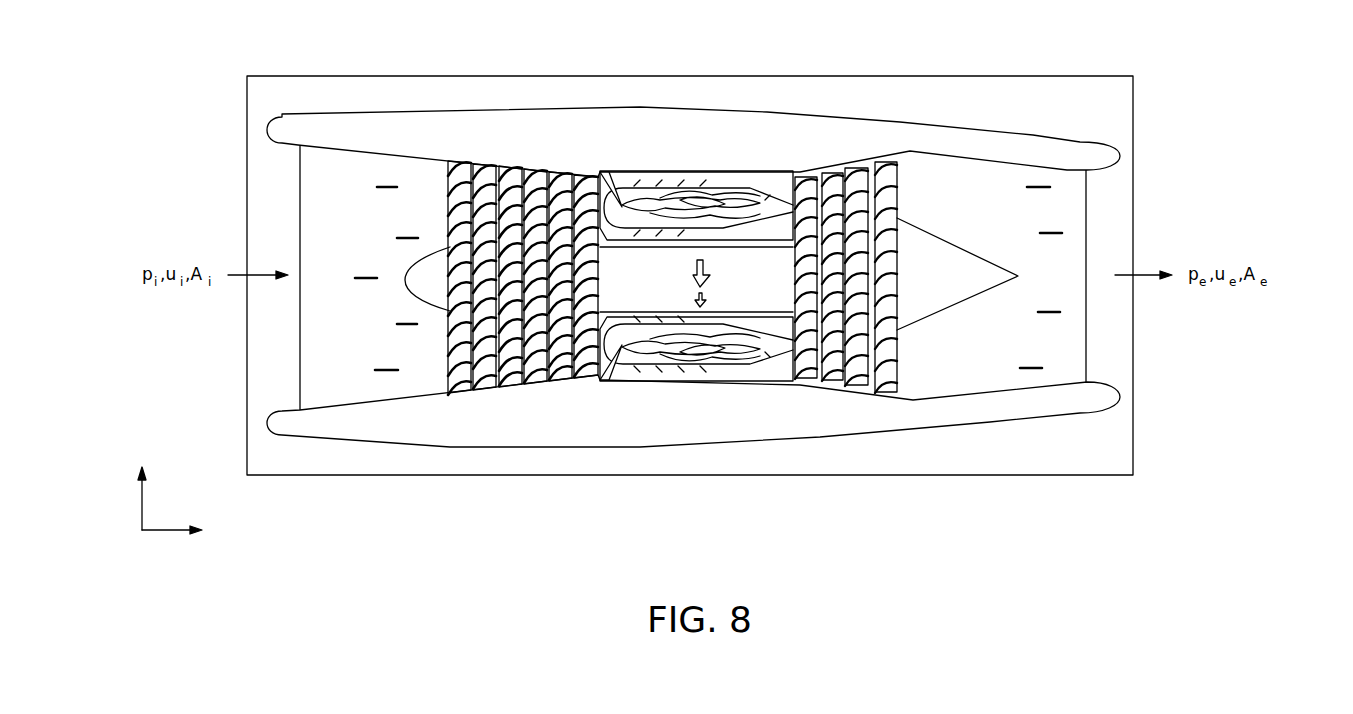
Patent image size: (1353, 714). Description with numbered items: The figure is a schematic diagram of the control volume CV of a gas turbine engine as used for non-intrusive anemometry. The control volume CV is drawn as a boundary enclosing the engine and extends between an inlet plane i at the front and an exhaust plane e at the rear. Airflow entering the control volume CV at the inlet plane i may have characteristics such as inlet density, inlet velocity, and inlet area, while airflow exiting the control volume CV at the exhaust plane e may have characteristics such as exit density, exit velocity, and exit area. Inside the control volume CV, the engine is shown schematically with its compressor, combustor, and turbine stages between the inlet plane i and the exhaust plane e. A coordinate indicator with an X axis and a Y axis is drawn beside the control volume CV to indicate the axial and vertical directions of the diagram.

The control volume CV is at (692, 488).
The inlet plane i is at (236, 137).
The exhaust plane e is at (1146, 123).
The X axis X is at (183, 532).
The Y axis Y is at (140, 487).